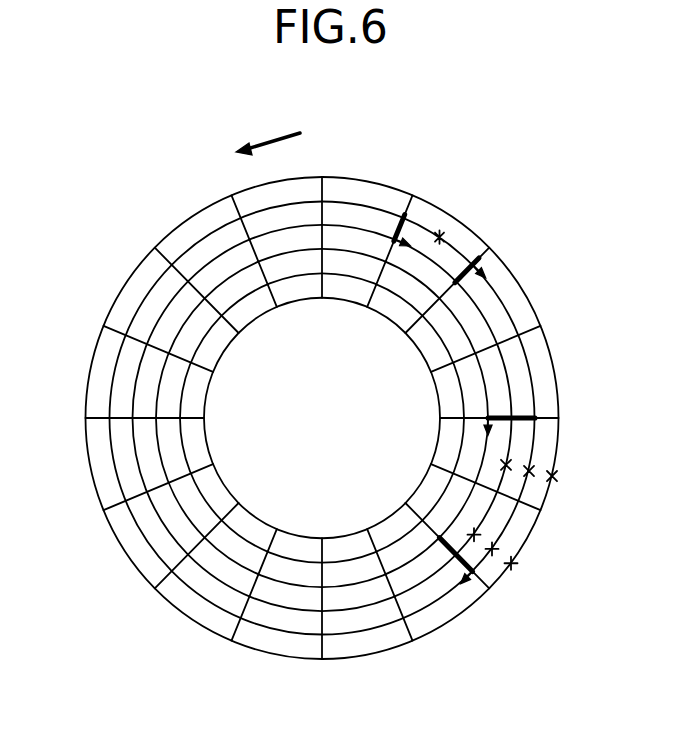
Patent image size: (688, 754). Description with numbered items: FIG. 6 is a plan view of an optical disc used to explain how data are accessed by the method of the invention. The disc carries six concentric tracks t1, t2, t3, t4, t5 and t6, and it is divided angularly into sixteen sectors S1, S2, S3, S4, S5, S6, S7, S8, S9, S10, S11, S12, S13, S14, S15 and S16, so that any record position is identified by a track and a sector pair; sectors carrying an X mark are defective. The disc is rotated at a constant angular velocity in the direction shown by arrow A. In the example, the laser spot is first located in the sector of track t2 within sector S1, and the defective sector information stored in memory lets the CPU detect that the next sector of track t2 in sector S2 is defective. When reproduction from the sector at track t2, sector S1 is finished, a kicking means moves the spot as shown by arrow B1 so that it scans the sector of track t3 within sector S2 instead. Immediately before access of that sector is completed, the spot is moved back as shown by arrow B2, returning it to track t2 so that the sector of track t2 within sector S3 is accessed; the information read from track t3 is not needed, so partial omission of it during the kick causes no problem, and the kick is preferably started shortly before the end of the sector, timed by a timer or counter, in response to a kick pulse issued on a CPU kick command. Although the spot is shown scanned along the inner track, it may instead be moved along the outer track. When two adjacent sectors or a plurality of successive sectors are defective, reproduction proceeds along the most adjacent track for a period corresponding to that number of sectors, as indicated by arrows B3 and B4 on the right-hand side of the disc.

The arrow A is at (272, 140).
The sector S1 is at (369, 184).
The sector S2 is at (455, 220).
The sector S3 is at (521, 287).
The sector S4 is at (556, 372).
The sector S5 is at (556, 465).
The sector S6 is at (521, 553).
The sector S7 is at (455, 620).
The sector S8 is at (369, 655).
The sector S9 is at (276, 655).
The sector S10 is at (191, 620).
The sector S11 is at (124, 553).
The sector S12 is at (90, 466).
The sector S13 is at (88, 372).
The sector S14 is at (124, 285).
The sector S15 is at (190, 218).
The sector S16 is at (276, 184).
The track t1 is at (305, 660).
The track t2 is at (222, 610).
The track t3 is at (170, 534).
The track t4 is at (186, 322).
The track t5 is at (182, 393).
The track t6 is at (206, 443).
The arrow B1 is at (416, 210).
The arrow B2 is at (480, 268).
The arrow B3 is at (537, 418).
The arrow B4 is at (468, 582).